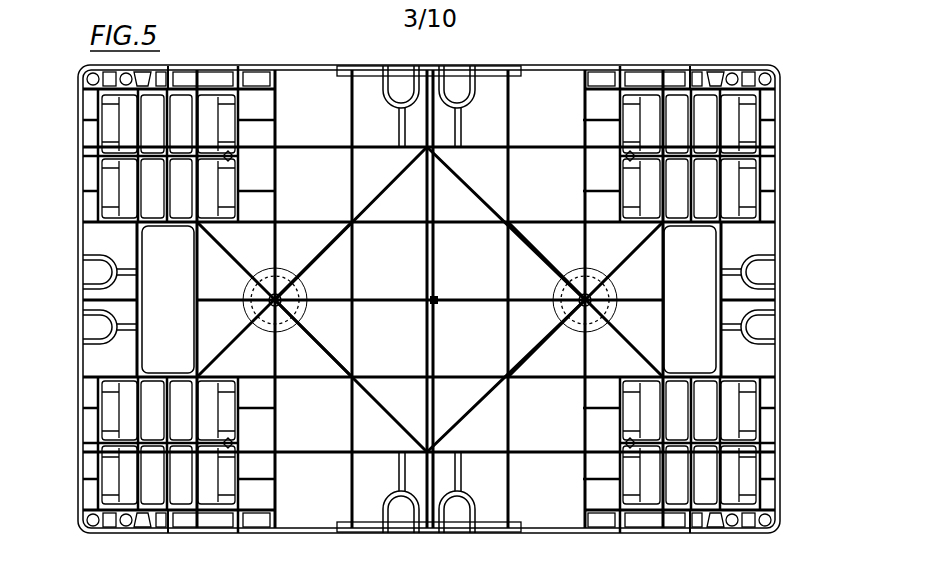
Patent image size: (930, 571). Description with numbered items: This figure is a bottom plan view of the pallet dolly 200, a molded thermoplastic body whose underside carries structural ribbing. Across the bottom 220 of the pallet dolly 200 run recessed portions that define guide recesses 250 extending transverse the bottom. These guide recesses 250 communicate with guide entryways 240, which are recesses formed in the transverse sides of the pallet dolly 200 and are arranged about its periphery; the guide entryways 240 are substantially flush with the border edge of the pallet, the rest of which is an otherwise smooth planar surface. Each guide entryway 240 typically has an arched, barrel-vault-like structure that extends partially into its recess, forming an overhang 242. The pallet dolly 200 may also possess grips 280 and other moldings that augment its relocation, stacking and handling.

The pallet dolly 200 is at (614, 36).
The bottom 220 is at (412, 281).
The guide entryway 240 is at (399, 57).
The overhang 242 is at (385, 70).
The guide recess 250 is at (378, 72).
The grip 280 is at (143, 208).